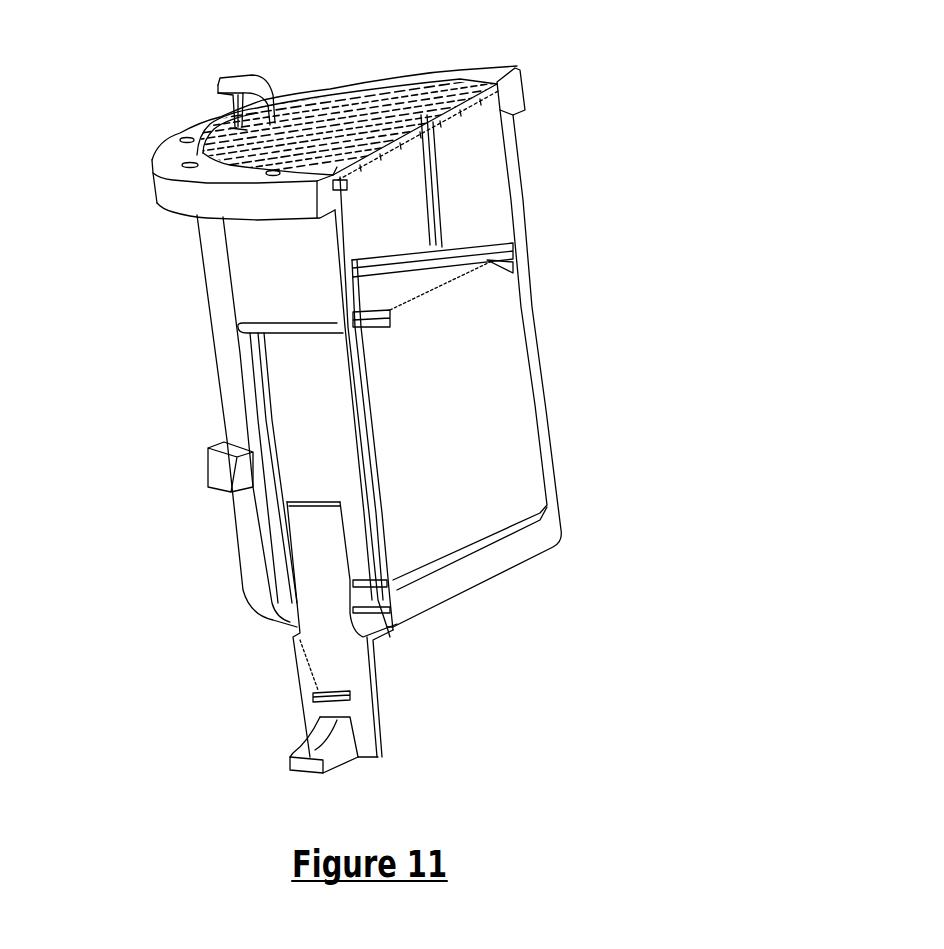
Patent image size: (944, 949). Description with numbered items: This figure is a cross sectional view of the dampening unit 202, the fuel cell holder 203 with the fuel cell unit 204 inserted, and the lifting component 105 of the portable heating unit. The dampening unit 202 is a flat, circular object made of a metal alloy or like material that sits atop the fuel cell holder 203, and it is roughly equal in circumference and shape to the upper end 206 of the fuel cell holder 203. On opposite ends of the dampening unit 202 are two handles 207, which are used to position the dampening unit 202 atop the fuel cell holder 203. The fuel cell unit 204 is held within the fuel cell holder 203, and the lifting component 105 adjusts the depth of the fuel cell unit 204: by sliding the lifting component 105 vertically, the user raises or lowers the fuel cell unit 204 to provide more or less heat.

The dampening unit 202 is at (386, 97).
The fuel cell holder 203 is at (220, 288).
The fuel cell unit 204 is at (440, 378).
The upper end 206 is at (187, 187).
The handle 207 is at (218, 86).
The lifting component 105 is at (330, 605).